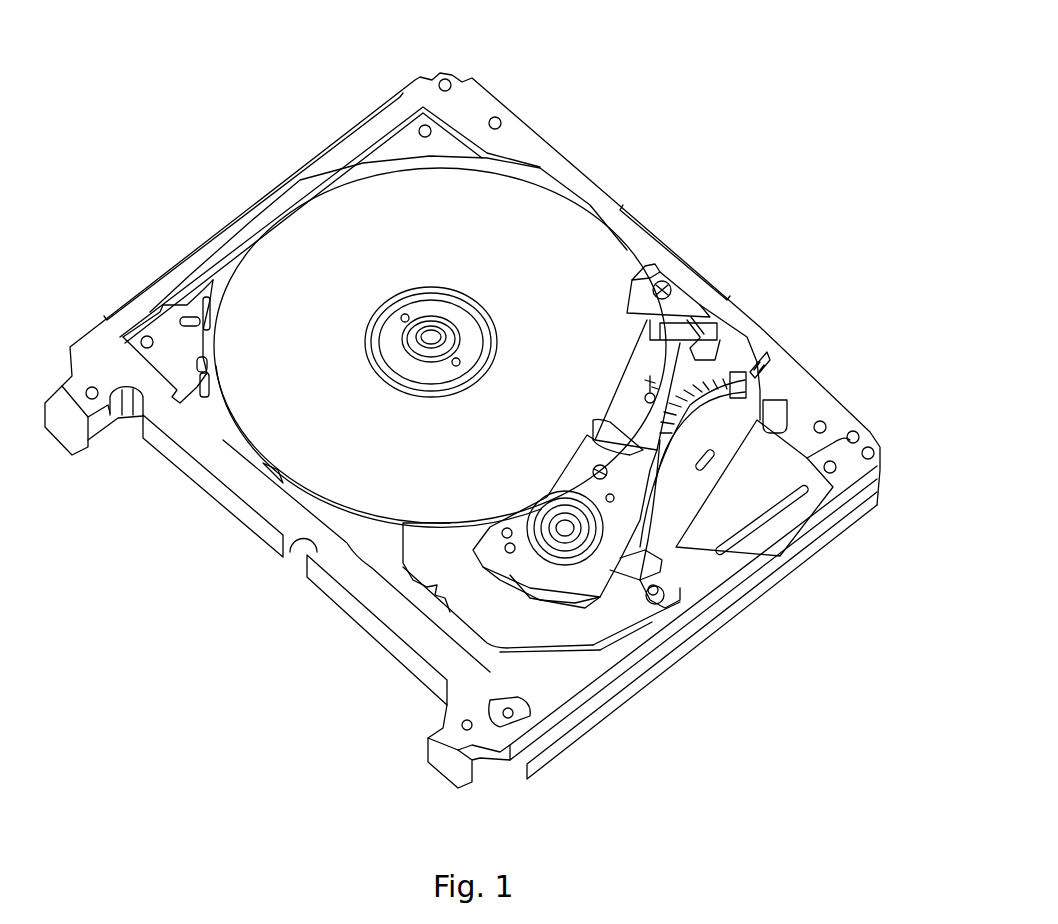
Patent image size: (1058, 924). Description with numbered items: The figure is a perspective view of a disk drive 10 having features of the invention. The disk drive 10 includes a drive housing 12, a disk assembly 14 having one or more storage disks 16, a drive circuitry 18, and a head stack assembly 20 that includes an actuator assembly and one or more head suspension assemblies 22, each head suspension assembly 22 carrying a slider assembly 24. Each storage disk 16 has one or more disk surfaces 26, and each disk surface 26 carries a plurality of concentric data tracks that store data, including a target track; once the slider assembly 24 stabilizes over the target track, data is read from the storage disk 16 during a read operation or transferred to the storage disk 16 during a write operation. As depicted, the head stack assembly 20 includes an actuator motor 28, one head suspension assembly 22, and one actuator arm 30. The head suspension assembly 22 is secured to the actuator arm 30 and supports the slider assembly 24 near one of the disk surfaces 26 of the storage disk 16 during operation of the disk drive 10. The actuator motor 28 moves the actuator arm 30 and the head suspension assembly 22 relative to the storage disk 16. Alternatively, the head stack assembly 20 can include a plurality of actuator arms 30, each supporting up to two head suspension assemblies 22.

The disk drive 10 is at (683, 155).
The drive housing 12 is at (358, 122).
The disk assembly 14 is at (310, 243).
The storage disk 16 is at (268, 283).
The drive circuitry 18 is at (747, 382).
The head stack assembly 20 is at (617, 510).
The head suspension assembly 22 is at (647, 415).
The slider assembly 24 is at (700, 343).
The disk surface 26 is at (516, 267).
The actuator motor 28 is at (582, 653).
The actuator arm 30 is at (568, 480).